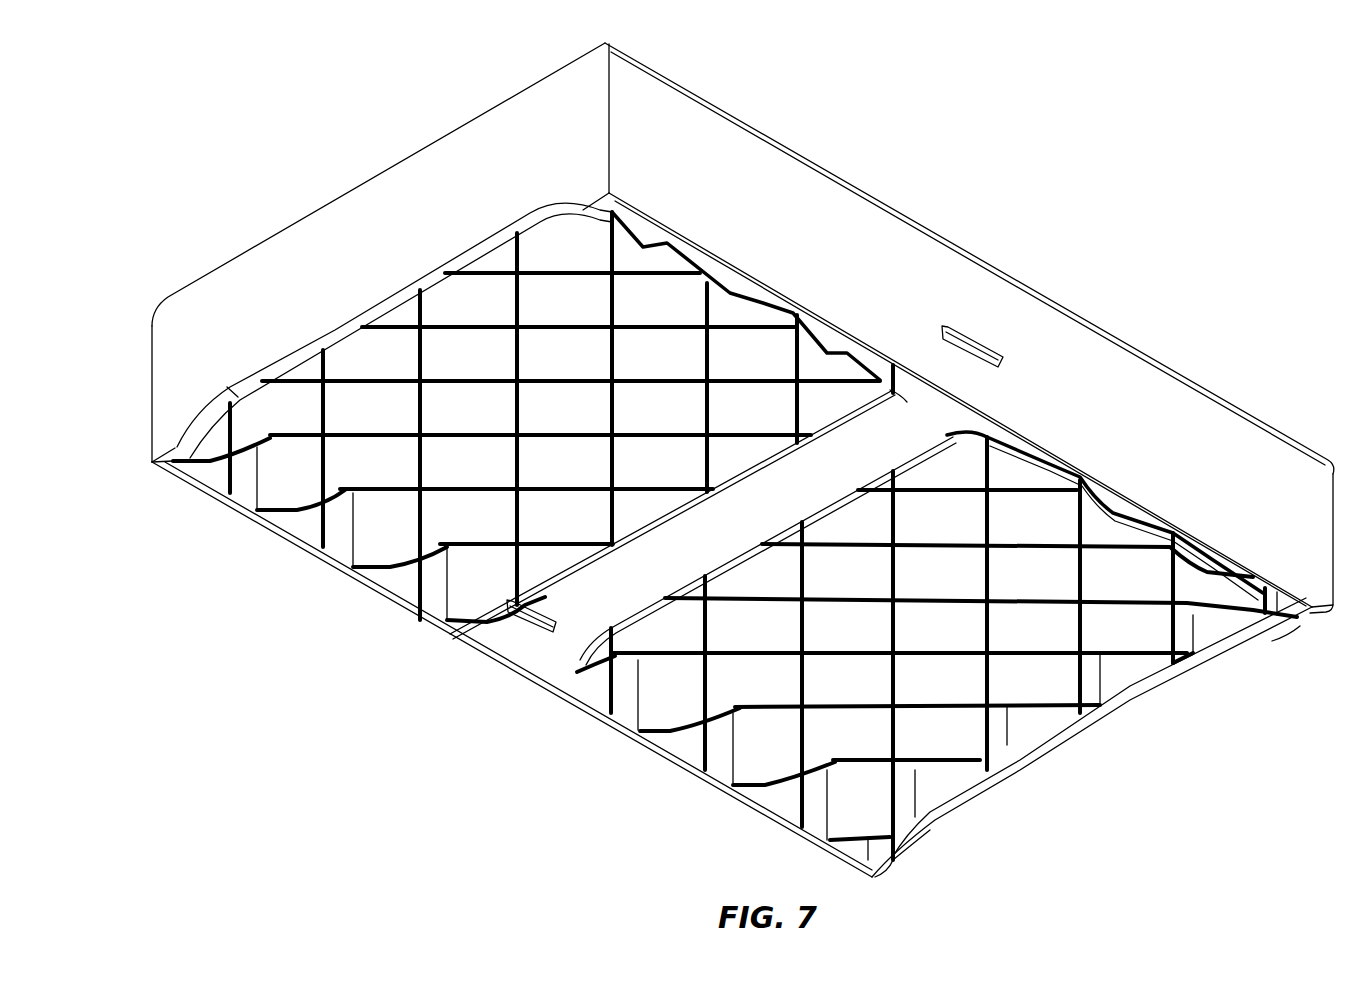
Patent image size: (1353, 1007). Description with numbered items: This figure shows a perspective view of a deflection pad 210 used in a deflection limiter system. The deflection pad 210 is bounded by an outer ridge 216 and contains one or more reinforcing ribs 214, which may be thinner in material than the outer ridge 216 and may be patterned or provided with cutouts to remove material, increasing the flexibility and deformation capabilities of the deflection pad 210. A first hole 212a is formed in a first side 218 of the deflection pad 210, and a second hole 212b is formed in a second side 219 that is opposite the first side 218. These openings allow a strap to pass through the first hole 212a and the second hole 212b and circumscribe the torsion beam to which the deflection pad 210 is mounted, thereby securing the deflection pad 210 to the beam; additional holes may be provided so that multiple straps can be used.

The deflection pad 210 is at (1258, 88).
The first side 218 is at (1162, 403).
The second side 219 is at (208, 514).
The first hole 212a is at (983, 338).
The outer ridge 216 is at (702, 247).
The reinforcing ribs 214 is at (388, 530).
The second hole 212b is at (527, 625).